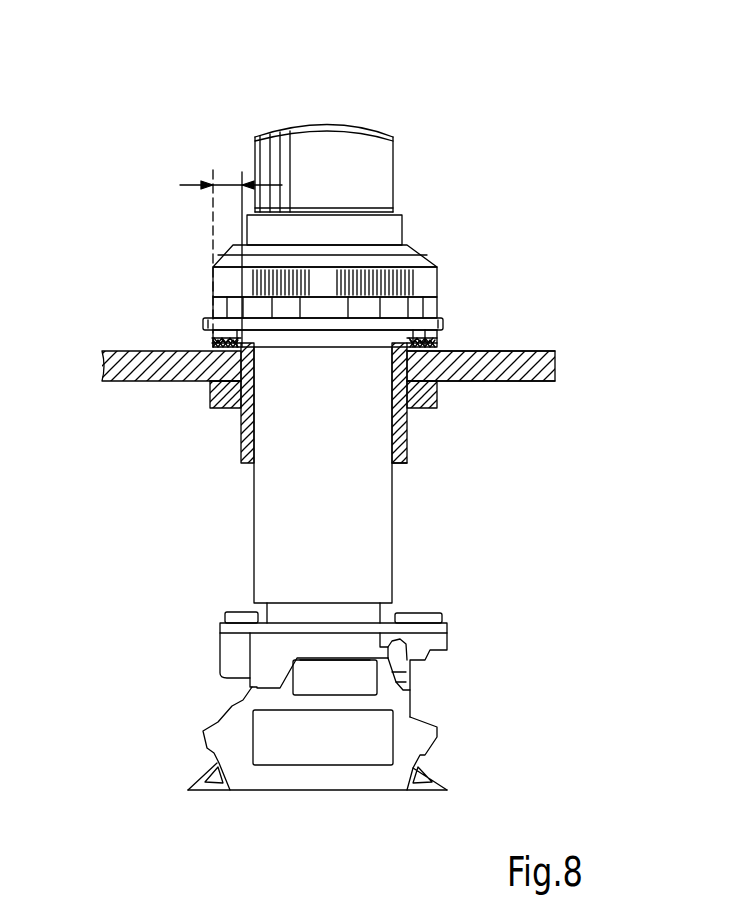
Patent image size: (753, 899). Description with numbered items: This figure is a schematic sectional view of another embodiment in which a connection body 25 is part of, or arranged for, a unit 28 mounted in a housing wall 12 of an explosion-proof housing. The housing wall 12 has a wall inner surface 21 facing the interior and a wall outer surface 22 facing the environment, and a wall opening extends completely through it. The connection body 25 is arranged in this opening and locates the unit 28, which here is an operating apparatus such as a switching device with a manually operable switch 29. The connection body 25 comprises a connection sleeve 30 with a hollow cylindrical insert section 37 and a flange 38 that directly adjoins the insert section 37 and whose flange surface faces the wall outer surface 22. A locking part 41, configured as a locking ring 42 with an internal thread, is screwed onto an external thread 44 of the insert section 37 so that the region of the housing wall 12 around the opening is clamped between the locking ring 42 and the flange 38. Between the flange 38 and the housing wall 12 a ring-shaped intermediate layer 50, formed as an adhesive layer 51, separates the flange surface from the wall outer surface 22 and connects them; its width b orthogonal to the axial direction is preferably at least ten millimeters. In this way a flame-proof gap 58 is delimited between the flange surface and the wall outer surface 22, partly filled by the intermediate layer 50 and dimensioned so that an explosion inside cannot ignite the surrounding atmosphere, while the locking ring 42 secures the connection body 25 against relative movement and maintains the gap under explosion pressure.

The housing wall 12 is at (555, 378).
The wall inner surface 21 is at (510, 384).
The wall outer surface 22 is at (510, 352).
The connection body 25 is at (398, 260).
The connection sleeve 30 is at (443, 322).
The unit 28 is at (433, 195).
The manually operable switch 29 is at (363, 125).
The insert section 37 is at (409, 437).
The flange 38 is at (417, 337).
The locking part 41 is at (212, 443).
The locking ring 42 is at (210, 407).
The external thread 44 is at (407, 457).
The intermediate layer 50 is at (143, 303).
The adhesive layer 51 is at (212, 350).
The flame-proof gap 58 is at (207, 357).
The width of intermediate layer b is at (230, 183).